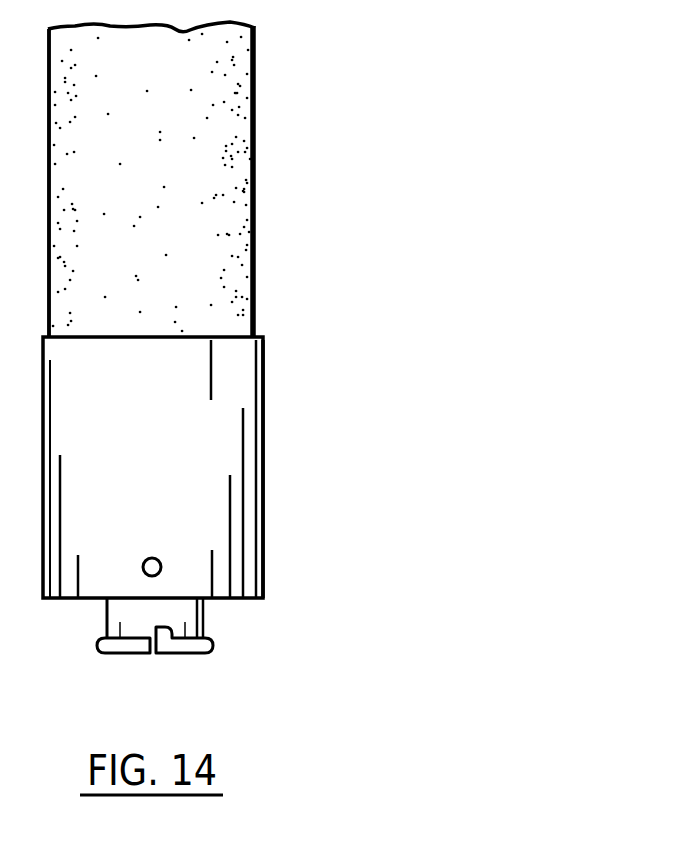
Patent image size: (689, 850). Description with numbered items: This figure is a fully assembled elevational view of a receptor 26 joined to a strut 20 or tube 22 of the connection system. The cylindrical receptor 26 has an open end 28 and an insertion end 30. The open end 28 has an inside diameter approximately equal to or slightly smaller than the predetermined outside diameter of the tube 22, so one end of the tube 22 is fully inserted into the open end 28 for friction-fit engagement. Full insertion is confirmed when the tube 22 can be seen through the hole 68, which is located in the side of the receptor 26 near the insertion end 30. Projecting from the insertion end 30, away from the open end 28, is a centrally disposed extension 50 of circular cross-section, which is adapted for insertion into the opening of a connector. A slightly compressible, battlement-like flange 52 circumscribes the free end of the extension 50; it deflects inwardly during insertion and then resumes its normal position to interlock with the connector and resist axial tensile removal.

The strut 20 is at (200, 160).
The tube 22 is at (151, 181).
The receptor 26 is at (322, 450).
The open end 28 is at (264, 370).
The insertion end 30 is at (264, 566).
The extension 50 is at (168, 614).
The flange 52 is at (192, 655).
The hole 68 is at (159, 560).